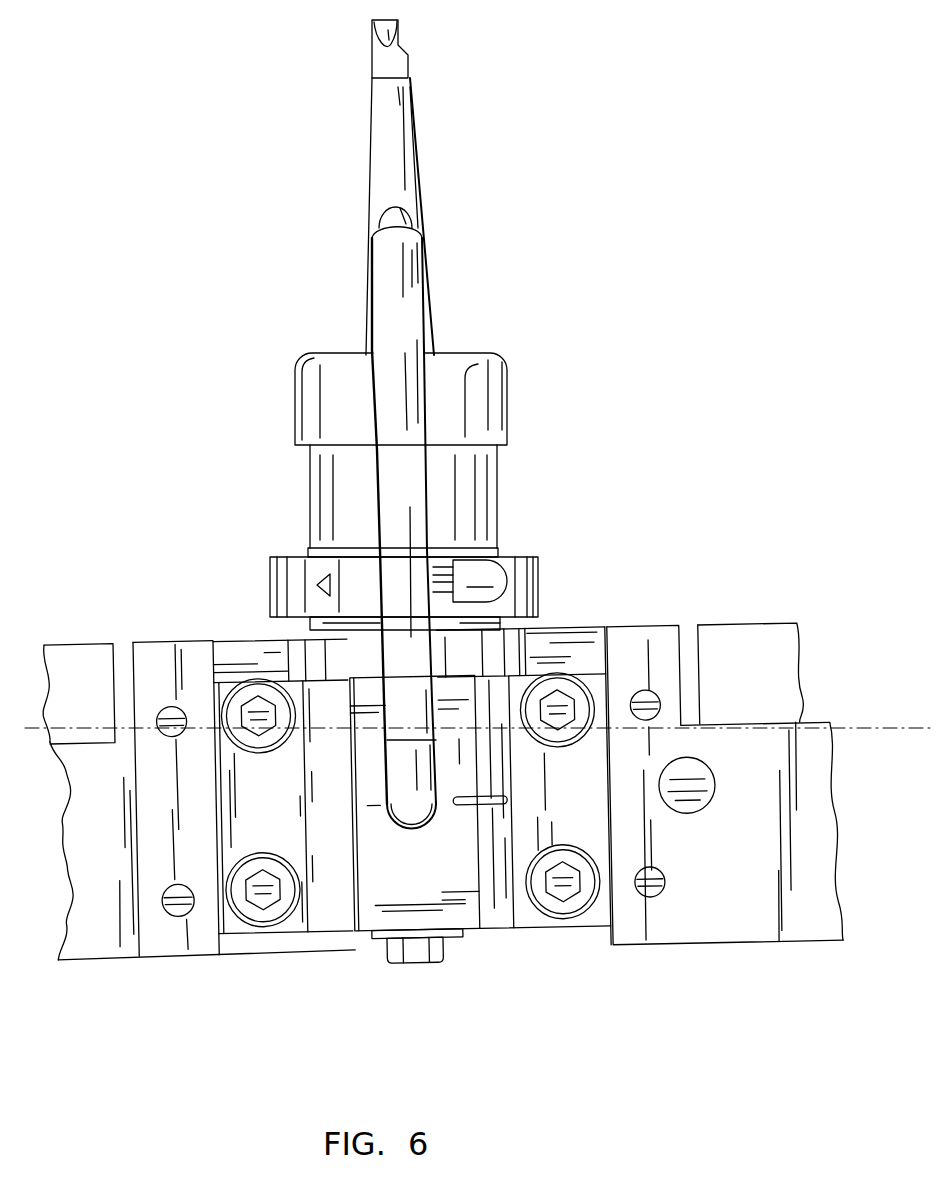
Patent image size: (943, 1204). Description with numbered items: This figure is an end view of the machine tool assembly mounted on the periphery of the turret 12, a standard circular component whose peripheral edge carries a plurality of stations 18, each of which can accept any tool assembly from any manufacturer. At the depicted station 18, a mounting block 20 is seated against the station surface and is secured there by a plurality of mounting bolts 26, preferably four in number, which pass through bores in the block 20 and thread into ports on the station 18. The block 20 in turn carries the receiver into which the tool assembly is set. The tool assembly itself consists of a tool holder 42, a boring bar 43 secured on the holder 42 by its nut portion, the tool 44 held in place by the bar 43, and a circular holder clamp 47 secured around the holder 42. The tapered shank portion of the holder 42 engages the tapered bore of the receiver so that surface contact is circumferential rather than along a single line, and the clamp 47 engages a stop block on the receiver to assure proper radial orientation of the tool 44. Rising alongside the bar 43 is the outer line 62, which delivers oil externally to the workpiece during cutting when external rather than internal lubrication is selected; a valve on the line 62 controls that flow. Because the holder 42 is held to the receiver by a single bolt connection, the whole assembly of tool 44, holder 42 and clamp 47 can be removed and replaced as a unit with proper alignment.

The turret 12 is at (144, 928).
The station 18 is at (742, 873).
The mounting block 20 is at (335, 904).
The mounting bolts 26 is at (255, 704).
The tool holder 42 is at (347, 500).
The boring bar 43 is at (407, 143).
The tool 44 is at (380, 58).
The holder clamp 47 is at (523, 578).
The outer line 62 is at (402, 333).